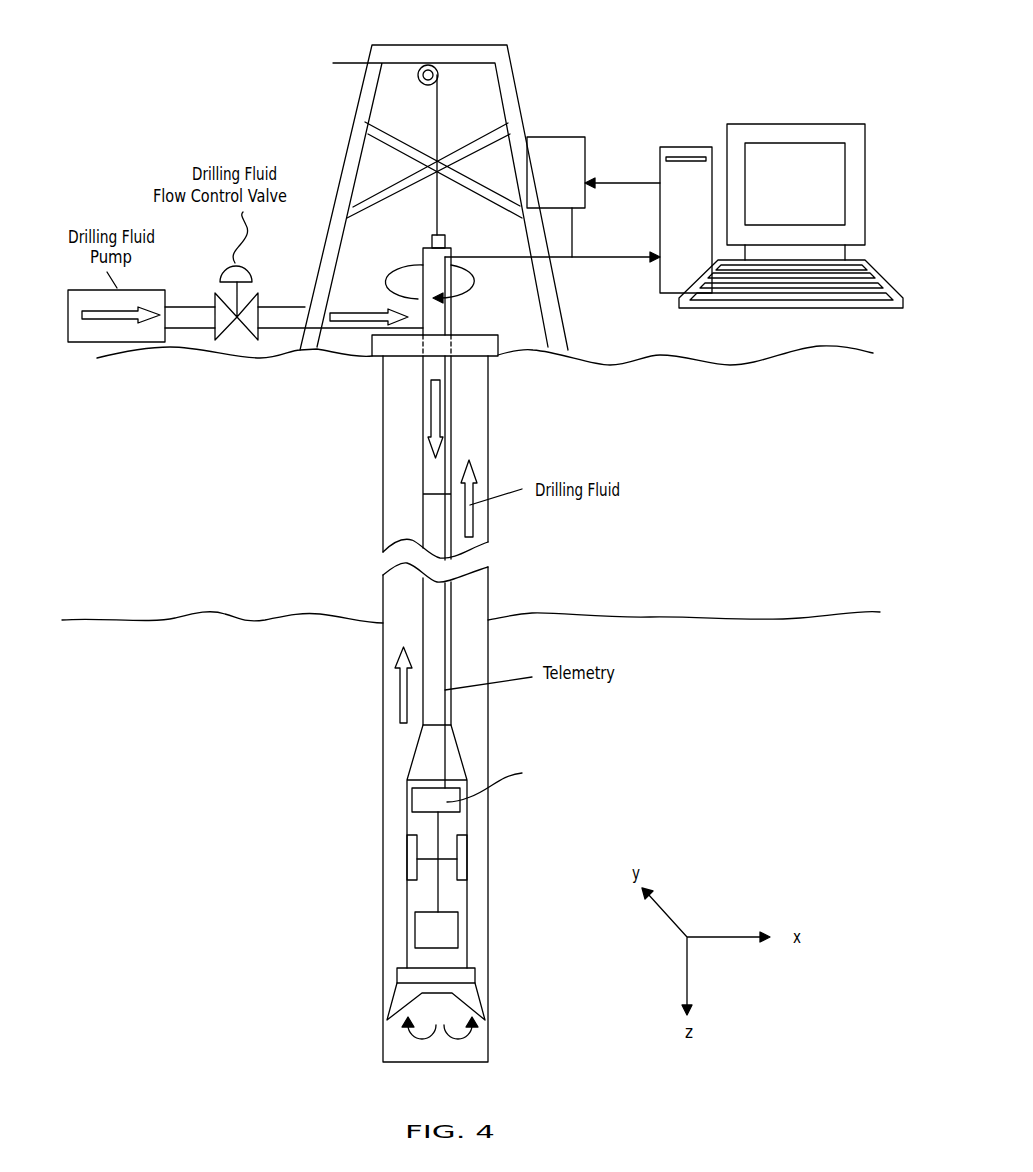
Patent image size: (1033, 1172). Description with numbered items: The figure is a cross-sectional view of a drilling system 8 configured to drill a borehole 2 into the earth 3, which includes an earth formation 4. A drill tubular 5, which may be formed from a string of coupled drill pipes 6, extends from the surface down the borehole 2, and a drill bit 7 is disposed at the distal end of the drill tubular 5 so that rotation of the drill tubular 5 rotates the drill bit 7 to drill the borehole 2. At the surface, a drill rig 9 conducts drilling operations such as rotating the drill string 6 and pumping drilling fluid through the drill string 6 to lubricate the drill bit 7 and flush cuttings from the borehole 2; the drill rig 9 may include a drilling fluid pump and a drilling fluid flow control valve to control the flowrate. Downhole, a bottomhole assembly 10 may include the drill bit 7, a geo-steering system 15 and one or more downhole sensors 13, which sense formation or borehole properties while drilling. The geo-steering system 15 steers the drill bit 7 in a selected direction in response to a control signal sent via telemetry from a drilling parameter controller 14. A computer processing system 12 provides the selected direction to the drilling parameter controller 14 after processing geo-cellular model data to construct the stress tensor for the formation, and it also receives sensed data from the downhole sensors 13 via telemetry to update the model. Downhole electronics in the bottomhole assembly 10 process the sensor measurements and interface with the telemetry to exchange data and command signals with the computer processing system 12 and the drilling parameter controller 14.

The borehole 2 is at (393, 512).
The earth 3 is at (220, 397).
The earth formation 4 is at (212, 666).
The drill tubular 5 is at (423, 600).
The drill pipe 6 is at (423, 468).
The drill bit 7 is at (402, 992).
The drilling system 8 is at (733, 68).
The drill rig 9 is at (360, 115).
The bottomhole assembly (BHA) 10 is at (412, 757).
The computer processing system 12 is at (682, 150).
The downhole sensor 13 is at (423, 927).
The drilling parameter controller 14 is at (565, 143).
The geo-steering system 15 is at (412, 852).